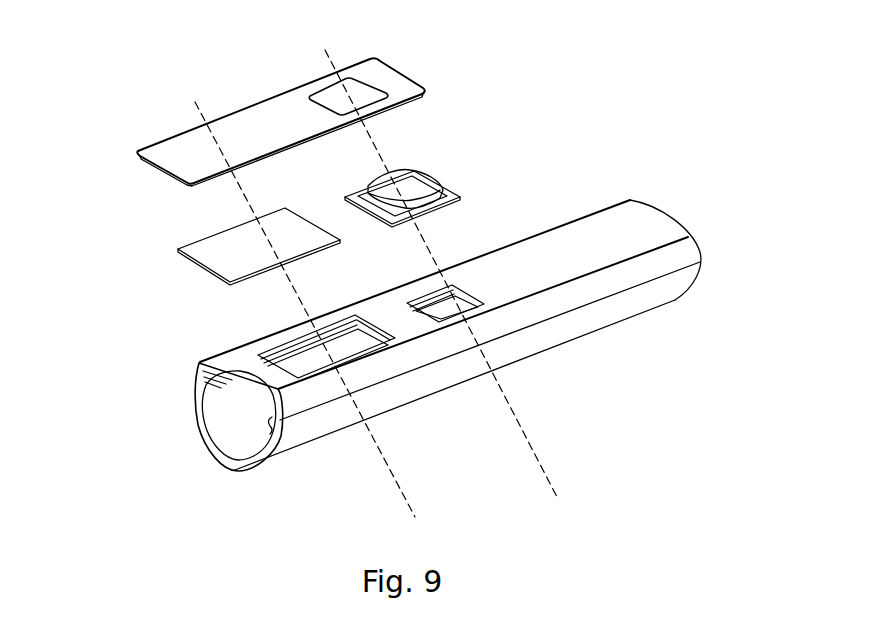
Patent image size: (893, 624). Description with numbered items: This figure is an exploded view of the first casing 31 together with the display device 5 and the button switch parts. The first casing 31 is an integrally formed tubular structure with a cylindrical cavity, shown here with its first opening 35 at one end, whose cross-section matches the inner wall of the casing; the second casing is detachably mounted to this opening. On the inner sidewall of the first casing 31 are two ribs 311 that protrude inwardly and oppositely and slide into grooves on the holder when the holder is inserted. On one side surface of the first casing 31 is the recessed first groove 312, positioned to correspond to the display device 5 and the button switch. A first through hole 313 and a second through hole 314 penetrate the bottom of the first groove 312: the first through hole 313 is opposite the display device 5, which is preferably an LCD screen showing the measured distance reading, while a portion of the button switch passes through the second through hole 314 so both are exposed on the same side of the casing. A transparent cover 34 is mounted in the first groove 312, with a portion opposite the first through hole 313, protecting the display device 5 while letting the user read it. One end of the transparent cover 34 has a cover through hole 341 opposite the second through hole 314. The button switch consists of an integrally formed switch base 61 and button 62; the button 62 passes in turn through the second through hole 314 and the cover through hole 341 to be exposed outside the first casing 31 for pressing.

The first casing 31 is at (602, 318).
The ribs 311 is at (206, 385).
The first groove 312 is at (495, 303).
The first through hole 313 is at (263, 337).
The second through hole 314 is at (455, 305).
The transparent cover 34 is at (263, 102).
The cover through hole 341 is at (338, 82).
The first opening 35 is at (238, 433).
The display device 5 is at (202, 245).
The switch base 61 is at (458, 198).
The button 62 is at (417, 170).